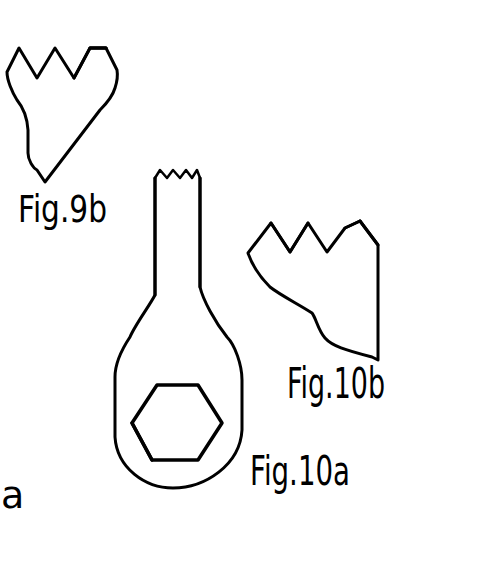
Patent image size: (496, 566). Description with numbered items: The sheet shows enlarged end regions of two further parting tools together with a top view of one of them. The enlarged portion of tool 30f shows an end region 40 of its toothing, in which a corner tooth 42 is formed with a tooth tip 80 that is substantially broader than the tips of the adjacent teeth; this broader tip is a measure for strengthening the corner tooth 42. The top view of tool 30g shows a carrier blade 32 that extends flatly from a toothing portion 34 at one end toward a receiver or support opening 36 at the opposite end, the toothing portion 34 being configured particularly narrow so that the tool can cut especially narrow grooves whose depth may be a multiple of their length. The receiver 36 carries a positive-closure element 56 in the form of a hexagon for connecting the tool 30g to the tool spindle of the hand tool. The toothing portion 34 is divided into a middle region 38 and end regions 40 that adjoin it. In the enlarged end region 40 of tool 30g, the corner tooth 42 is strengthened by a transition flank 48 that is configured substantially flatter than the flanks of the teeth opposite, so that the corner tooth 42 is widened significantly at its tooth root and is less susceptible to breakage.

In FIG. 9B, the tool 30f is at (102, 115).
In FIG. 10A, the tool 30g is at (115, 373).
In FIG. 10B, the tool 30g is at (352, 290).
In FIG. 10A, the carrier blade 32 is at (183, 295).
In FIG. 10A, the toothing portion 34 is at (173, 190).
In FIG. 10A, the receiver or support opening 36 is at (173, 450).
In FIG. 10B, the middle region 38 is at (281, 232).
In FIG. 9B, the end region 40 is at (102, 43).
In FIG. 10B, the end region 40 is at (367, 230).
In FIG. 9B, the corner tooth 42 is at (97, 82).
In FIG. 10B, the corner tooth 42 is at (358, 242).
In FIG. 10B, the transition flank 48 is at (347, 227).
In FIG. 10A, the positive-closure element 56 is at (143, 428).
In FIG. 9B, the tooth tip 80 is at (100, 45).